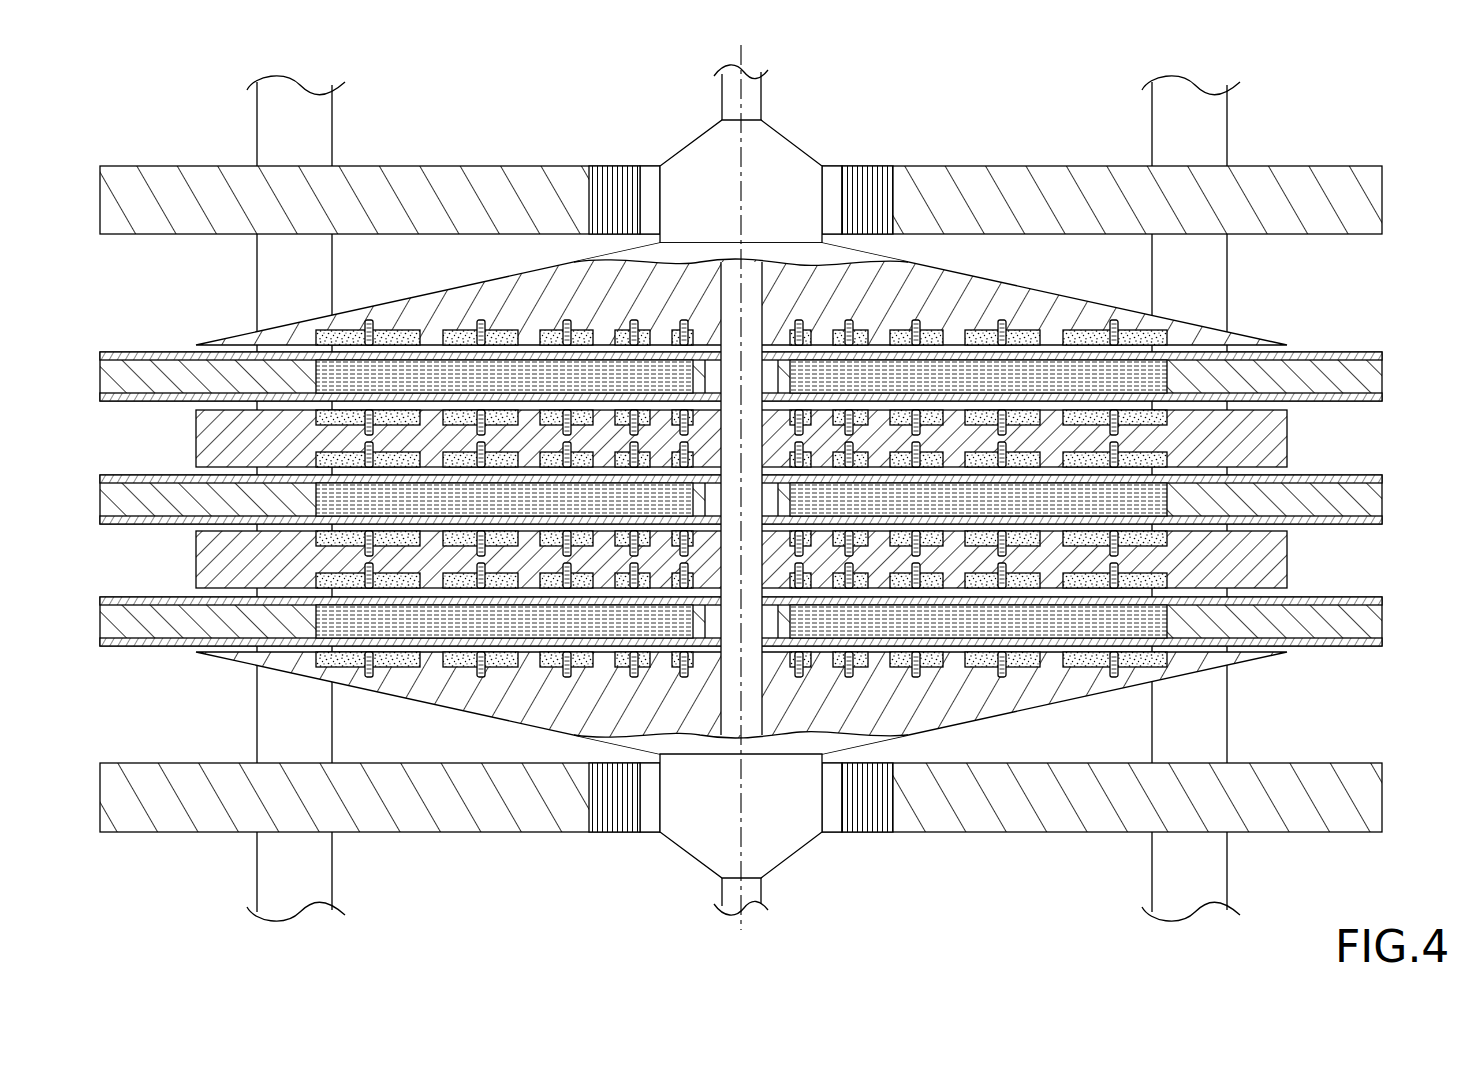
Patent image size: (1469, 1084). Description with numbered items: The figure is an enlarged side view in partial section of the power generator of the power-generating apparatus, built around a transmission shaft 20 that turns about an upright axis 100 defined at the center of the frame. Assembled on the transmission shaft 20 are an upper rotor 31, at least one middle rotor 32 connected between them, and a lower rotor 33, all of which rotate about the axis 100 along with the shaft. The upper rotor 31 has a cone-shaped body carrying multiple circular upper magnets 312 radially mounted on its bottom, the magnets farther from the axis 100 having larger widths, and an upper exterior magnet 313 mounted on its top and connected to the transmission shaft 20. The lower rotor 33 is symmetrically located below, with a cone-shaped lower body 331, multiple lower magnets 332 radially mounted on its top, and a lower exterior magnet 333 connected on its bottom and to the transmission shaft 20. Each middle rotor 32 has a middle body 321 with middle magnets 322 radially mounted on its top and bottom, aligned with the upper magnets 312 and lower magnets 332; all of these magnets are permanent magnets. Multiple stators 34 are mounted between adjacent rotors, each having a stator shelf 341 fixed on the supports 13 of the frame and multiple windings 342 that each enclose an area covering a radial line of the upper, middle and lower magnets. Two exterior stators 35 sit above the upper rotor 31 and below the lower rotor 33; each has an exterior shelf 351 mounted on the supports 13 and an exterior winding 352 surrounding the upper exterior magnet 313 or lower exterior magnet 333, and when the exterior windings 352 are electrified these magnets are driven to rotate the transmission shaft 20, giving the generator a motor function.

The supports 13 is at (277, 123).
The transmission shaft 20 is at (753, 97).
The upper rotor 31 is at (741, 228).
The middle rotor 32 is at (815, 425).
The lower rotor 33 is at (741, 766).
The stators 34 is at (784, 500).
The exterior stators 35 is at (741, 487).
The axis 100 is at (742, 52).
The upper magnets 312 is at (937, 330).
The upper exterior magnet 313 is at (712, 155).
The middle body 321 is at (1231, 430).
The middle magnets 322 is at (940, 415).
The lower body 331 is at (1062, 690).
The lower magnets 332 is at (933, 668).
The lower exterior magnet 333 is at (782, 842).
The stator shelf 341 is at (1333, 367).
The windings 342 is at (1137, 373).
The exterior shelf 351 is at (452, 178).
The exterior winding 352 is at (602, 173).